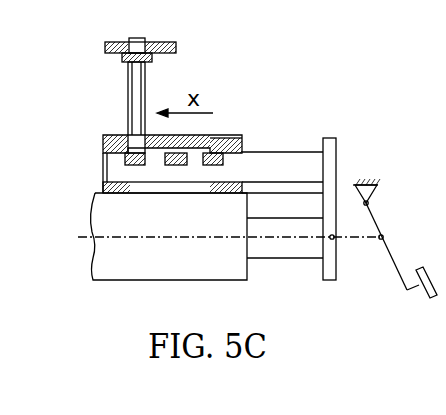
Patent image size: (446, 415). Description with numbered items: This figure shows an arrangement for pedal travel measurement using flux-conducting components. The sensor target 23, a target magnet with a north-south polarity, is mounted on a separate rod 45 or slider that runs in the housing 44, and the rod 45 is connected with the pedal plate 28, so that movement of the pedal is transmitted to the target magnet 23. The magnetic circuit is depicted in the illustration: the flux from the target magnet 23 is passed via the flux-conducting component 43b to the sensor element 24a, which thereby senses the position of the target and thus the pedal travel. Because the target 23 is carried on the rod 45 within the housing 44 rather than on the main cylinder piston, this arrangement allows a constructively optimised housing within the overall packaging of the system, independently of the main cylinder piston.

The sensor target 23 is at (102, 163).
The sensor element 24a is at (156, 55).
The flux-conducting component 43b is at (137, 36).
The housing 44 is at (227, 136).
The rod 45 is at (283, 150).
The pedal plate 28 is at (330, 137).